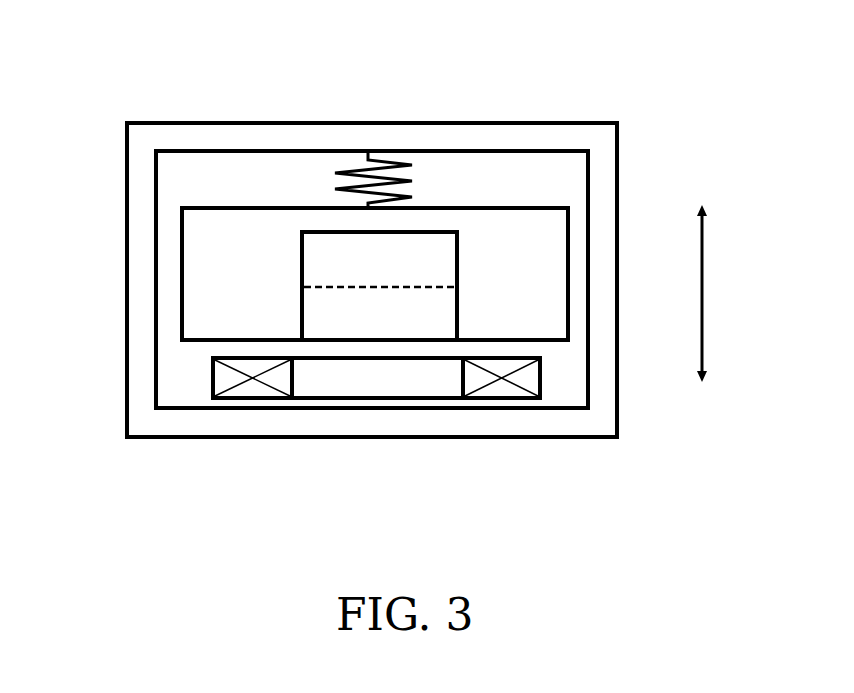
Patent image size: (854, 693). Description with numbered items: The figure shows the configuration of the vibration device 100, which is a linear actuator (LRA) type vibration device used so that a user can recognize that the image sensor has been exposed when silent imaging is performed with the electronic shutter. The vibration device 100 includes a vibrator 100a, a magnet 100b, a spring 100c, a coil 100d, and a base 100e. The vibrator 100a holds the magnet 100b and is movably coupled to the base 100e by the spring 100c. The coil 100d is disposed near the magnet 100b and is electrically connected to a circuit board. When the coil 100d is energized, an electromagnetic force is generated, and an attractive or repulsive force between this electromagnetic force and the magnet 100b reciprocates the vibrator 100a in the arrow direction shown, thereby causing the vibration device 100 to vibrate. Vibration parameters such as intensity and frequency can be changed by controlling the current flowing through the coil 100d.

The vibration device 100 is at (456, 220).
The vibrator 100a is at (327, 191).
The magnet 100b is at (450, 202).
The spring 100c is at (333, 108).
The coil 100d is at (416, 425).
The base 100e is at (317, 280).